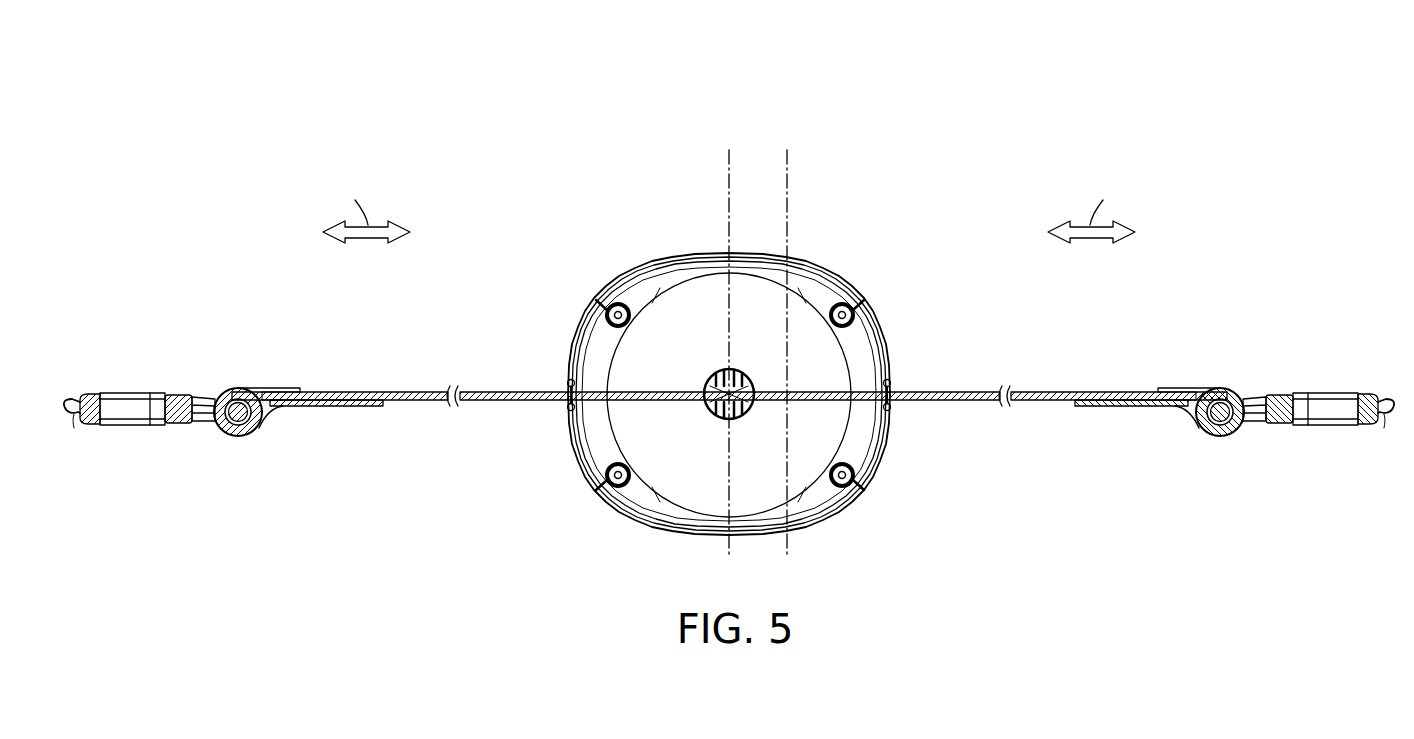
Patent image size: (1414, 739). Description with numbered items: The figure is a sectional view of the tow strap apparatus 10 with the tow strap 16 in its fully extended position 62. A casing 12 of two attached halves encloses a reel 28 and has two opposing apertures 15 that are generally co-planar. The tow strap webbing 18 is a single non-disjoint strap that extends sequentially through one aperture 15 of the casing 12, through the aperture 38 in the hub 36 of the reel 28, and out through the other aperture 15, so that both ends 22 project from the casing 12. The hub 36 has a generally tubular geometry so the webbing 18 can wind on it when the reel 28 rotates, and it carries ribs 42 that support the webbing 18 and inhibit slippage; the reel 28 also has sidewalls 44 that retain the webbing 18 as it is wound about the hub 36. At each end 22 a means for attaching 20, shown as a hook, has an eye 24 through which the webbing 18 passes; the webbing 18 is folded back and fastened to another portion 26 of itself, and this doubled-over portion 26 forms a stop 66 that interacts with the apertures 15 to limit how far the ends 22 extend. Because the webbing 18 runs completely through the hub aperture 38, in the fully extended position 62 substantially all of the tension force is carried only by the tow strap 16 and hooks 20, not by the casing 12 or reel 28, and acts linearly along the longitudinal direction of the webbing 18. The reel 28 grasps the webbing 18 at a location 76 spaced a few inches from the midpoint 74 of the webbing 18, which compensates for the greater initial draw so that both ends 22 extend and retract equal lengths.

The tow strap apparatus 10 is at (505, 170).
The casing 12 is at (805, 276).
The apertures 15 is at (555, 381).
The tow strap 16 is at (1150, 370).
The tow strap webbing 18 is at (415, 391).
The means for attaching 20 is at (85, 420).
The ends 22 is at (238, 442).
The eye 24 is at (207, 388).
The doubled-over portion of the webbing 26 is at (330, 412).
The reel 28 is at (605, 420).
The hub 36 is at (754, 371).
The aperture 38 is at (704, 405).
The ribs 42 is at (723, 372).
The sidewalls 44 is at (668, 484).
The fully extended position 62 is at (725, 112).
The stop 66 is at (390, 407).
The midpoint 74 is at (787, 183).
The location 76 is at (728, 165).